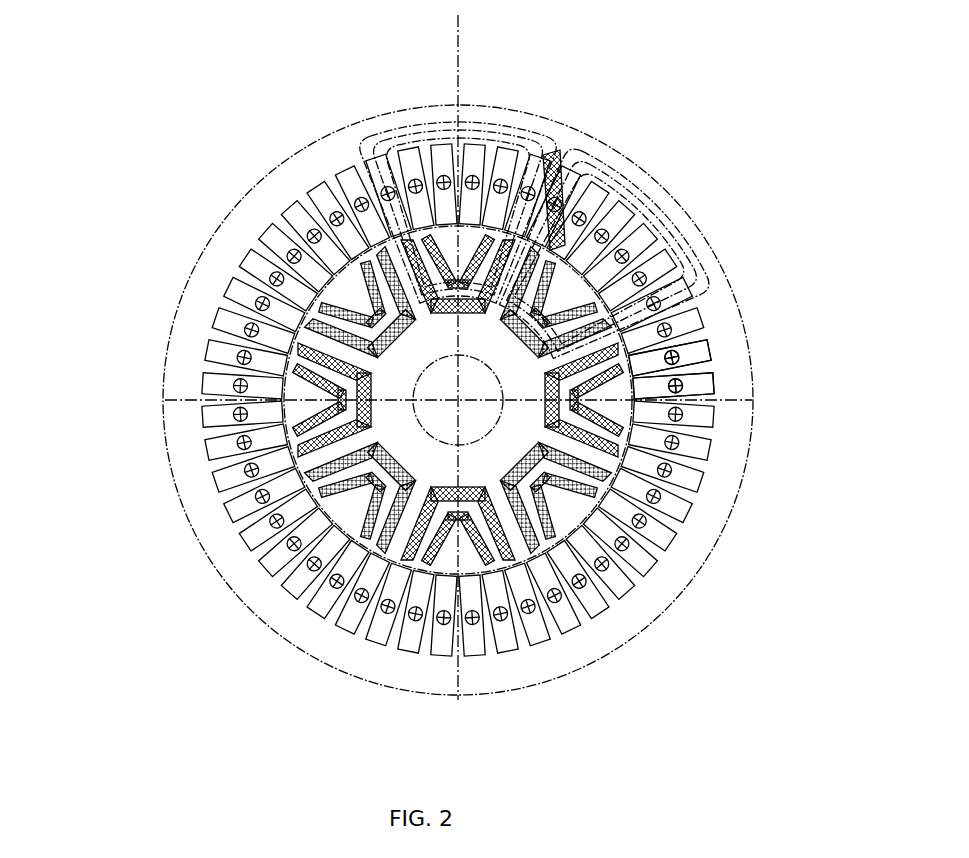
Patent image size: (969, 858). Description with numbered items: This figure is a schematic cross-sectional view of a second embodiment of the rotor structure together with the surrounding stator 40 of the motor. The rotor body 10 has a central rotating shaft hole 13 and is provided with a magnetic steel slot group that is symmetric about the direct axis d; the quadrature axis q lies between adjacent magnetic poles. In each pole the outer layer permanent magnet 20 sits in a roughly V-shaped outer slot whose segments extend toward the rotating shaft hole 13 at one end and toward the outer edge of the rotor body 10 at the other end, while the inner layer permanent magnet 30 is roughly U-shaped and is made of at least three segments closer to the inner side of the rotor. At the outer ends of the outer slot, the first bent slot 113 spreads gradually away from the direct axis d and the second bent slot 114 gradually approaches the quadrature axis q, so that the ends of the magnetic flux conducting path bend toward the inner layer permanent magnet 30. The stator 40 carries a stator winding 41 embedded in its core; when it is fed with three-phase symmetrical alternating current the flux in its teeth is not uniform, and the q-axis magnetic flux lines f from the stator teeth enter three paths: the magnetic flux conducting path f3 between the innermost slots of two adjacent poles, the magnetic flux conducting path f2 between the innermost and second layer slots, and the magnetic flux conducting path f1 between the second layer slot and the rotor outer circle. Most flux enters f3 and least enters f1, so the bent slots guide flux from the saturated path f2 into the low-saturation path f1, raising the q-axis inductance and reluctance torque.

The rotor body 10 is at (405, 308).
The rotating shaft hole 13 is at (453, 409).
The outer layer permanent magnet 20 is at (712, 382).
The inner layer permanent magnet 30 is at (474, 400).
The stator 40 is at (491, 167).
The stator winding 41 is at (614, 220).
The first bent slot 113 is at (237, 303).
The second bent slot 114 is at (448, 308).
The direct axis d is at (458, 356).
The q-axis magnetic flux lines f is at (469, 85).
The quadrature axis q is at (577, 110).
The magnetic flux conducting path f1 is at (408, 344).
The magnetic flux conducting path f2 is at (444, 344).
The magnetic flux conducting path f3 is at (492, 344).